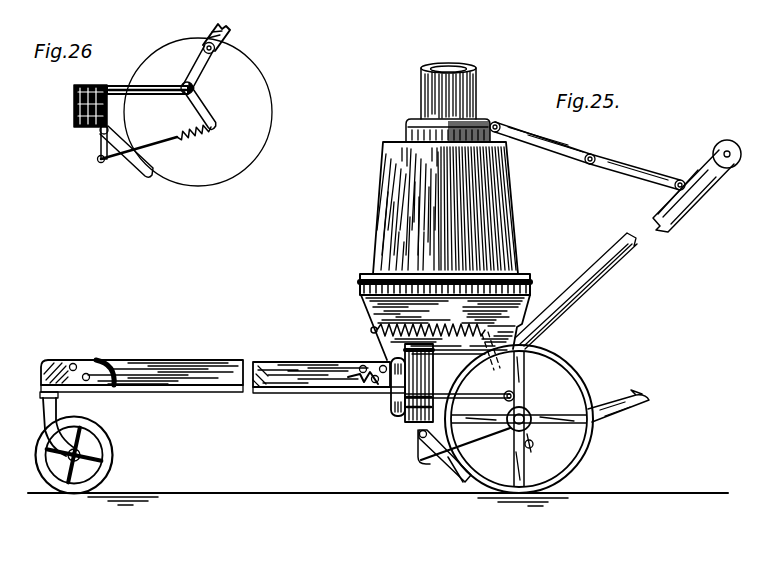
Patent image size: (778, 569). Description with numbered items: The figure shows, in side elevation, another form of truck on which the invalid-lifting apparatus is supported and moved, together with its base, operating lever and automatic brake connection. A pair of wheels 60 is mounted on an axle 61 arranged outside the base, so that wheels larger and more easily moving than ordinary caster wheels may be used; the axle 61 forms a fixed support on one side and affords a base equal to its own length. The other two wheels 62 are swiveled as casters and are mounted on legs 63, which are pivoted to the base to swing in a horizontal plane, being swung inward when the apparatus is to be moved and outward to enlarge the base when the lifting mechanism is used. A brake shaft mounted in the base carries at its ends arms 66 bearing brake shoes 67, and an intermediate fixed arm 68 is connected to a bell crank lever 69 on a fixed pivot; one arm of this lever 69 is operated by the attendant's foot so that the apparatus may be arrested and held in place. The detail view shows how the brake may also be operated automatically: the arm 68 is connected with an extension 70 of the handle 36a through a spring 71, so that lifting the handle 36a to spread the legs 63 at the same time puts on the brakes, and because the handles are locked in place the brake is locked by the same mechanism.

In FIG. 25, the handle 36a is at (591, 288).
In FIG. 25, the wheels 60 is at (568, 366).
In FIG. 25, the axle 61 is at (524, 410).
In FIG. 25, the wheels 62 is at (102, 448).
In FIG. 25, the legs 63 is at (166, 387).
In FIG. 25, the arms 66 is at (439, 462).
In FIG. 25, the brake shoes 67 is at (463, 482).
In FIG. 26, the arm 68 is at (89, 151).
In FIG. 25, the arm 68 is at (410, 453).
In FIG. 25, the bell crank lever 69 is at (522, 447).
In FIG. 26, the extension 70 is at (199, 97).
In FIG. 26, the spring 71 is at (183, 128).